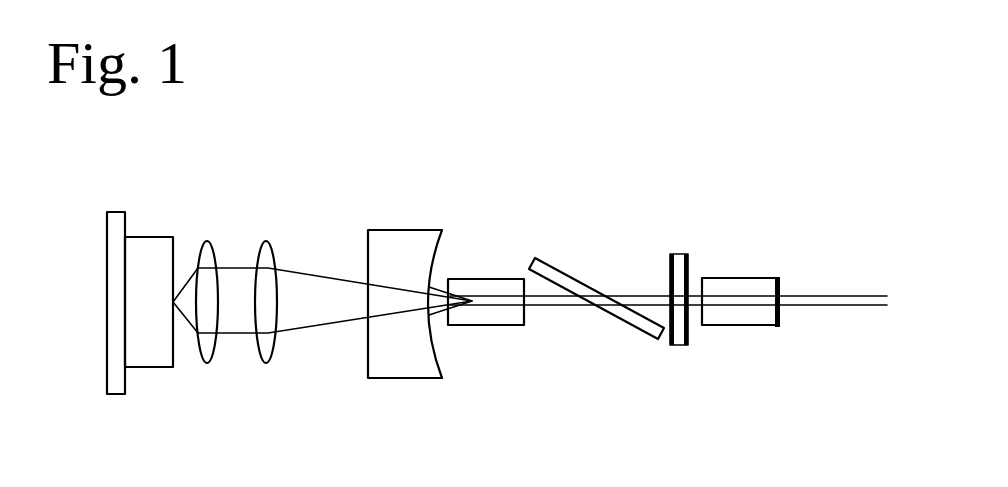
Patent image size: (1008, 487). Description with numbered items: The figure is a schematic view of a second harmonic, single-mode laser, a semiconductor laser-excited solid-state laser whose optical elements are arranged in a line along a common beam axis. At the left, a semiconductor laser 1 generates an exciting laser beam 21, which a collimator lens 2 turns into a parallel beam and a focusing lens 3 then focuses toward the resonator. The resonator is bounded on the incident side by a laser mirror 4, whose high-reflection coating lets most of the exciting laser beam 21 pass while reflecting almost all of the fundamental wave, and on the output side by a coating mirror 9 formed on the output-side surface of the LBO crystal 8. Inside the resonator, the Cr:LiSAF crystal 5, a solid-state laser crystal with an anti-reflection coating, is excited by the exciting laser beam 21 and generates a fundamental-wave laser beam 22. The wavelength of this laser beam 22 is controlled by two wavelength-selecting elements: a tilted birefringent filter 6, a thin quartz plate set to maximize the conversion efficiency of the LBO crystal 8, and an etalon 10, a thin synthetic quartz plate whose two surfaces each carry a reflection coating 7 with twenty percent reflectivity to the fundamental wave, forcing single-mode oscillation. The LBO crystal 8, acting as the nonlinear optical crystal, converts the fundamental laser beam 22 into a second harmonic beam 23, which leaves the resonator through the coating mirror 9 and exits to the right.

The semiconductor laser 1 is at (153, 253).
The collimator lens 2 is at (207, 257).
The focusing lens 3 is at (265, 260).
The laser mirror 4 is at (405, 247).
The Cr:LiSAF crystal 5 is at (505, 287).
The birefringent filter 6 is at (545, 267).
The reflection coating 7 is at (667, 272).
The LBO crystal 8 is at (747, 287).
The coating mirror 9 is at (783, 285).
The etalon 10 is at (688, 304).
The exciting laser beam 21 is at (320, 327).
The laser beam 22 is at (552, 305).
The SH beam 23 is at (855, 307).